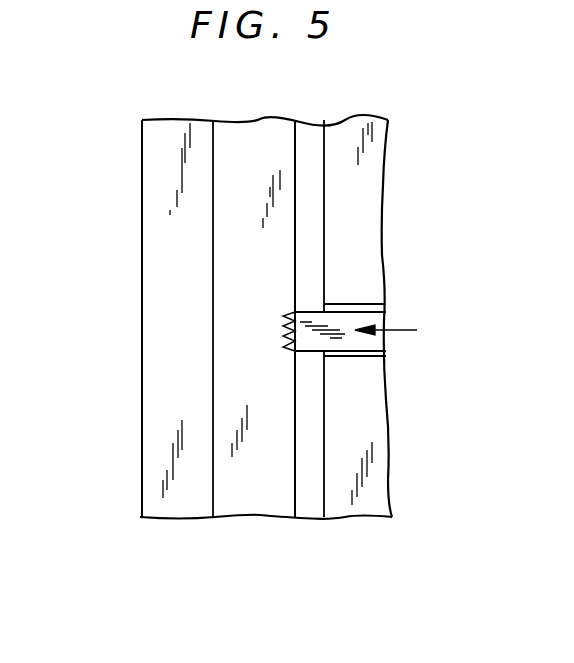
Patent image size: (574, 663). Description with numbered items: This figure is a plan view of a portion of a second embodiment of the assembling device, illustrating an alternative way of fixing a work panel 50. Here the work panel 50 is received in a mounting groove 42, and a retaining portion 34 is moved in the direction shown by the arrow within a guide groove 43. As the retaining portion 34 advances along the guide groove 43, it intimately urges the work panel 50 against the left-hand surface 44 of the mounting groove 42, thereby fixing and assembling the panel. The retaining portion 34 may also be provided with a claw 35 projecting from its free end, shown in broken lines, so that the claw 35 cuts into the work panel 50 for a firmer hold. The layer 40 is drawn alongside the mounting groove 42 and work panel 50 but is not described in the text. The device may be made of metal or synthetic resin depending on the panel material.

The left-hand surface of mounting groove 44 is at (213, 167).
The work panel 50 is at (252, 508).
The mounting groove 42 is at (308, 507).
The outer layer 40 is at (367, 505).
The retaining portion 34 is at (308, 315).
The guide groove 43 is at (385, 352).
The claw 35 is at (283, 314).